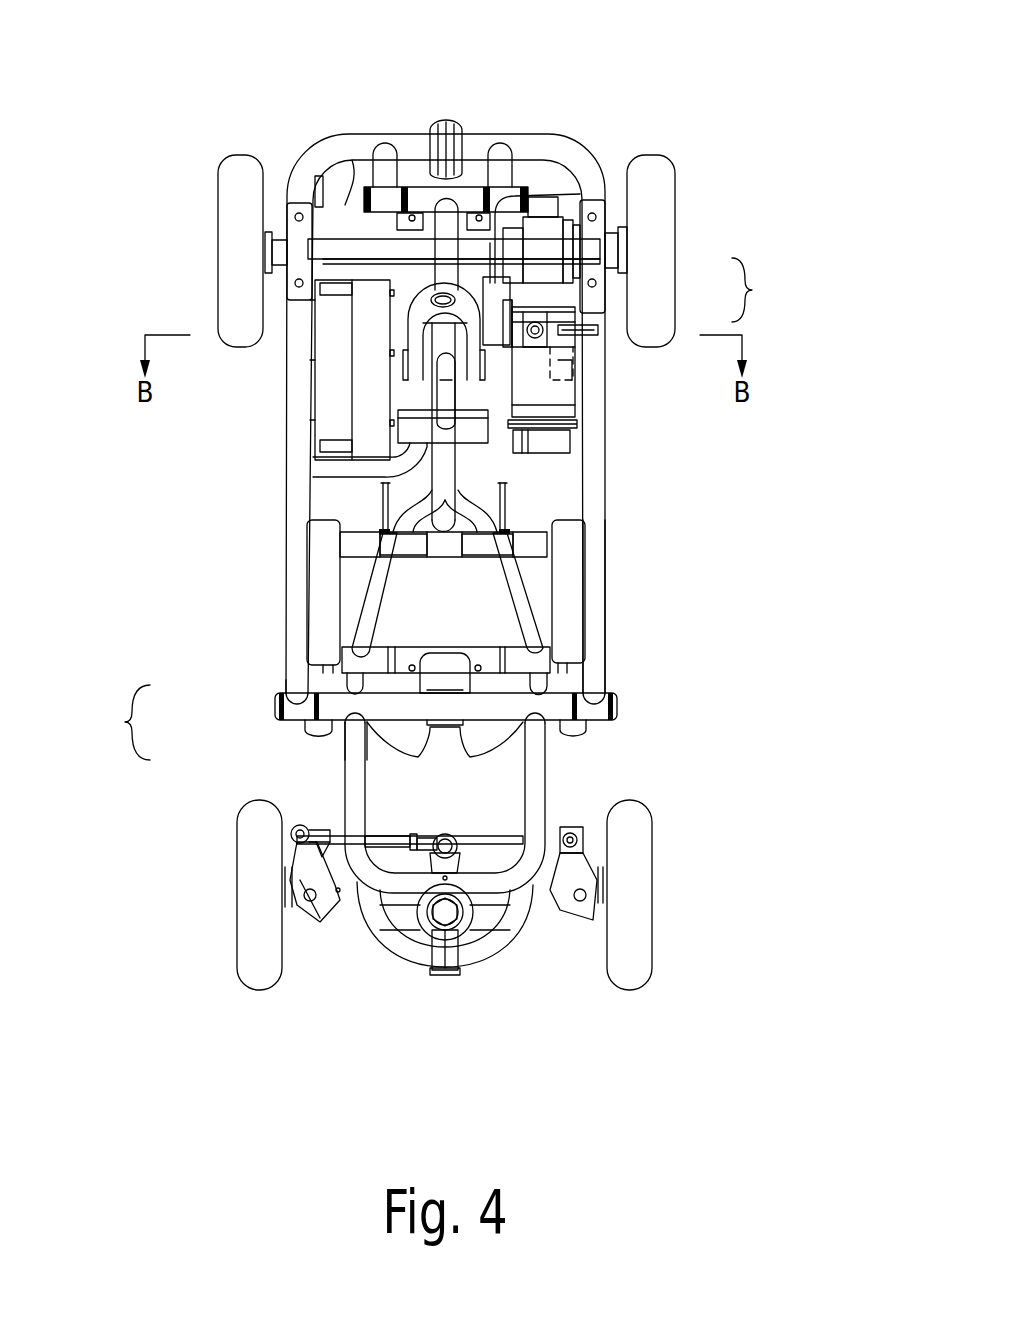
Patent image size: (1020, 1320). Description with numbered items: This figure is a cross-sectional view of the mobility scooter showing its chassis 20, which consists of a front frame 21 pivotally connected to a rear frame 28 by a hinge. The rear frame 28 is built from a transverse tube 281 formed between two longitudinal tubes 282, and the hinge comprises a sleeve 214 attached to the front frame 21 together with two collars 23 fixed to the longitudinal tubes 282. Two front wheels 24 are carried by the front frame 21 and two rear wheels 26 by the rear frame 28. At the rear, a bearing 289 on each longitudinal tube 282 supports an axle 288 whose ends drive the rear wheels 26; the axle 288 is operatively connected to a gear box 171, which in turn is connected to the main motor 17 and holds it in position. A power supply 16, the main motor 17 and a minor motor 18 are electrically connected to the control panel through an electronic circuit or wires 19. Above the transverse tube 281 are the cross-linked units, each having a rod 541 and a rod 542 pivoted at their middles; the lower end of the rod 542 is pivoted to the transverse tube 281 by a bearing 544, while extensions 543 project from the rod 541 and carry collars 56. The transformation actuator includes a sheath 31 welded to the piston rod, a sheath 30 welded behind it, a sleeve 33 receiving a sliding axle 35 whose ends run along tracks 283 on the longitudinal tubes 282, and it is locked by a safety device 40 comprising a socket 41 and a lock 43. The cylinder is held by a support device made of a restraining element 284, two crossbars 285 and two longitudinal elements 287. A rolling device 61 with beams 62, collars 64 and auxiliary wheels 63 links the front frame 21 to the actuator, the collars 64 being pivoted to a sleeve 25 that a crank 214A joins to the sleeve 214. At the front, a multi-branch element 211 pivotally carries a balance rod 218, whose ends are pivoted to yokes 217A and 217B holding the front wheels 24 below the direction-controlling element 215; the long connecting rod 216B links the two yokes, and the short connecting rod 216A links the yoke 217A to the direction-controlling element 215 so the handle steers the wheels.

The power supply 16 is at (328, 300).
The main motor 17 is at (568, 403).
The minor motor 18 is at (568, 357).
The wires 19 is at (342, 270).
The chassis 20 is at (124, 722).
The front frame 21 is at (318, 757).
The collars 23 is at (485, 690).
The front wheels 24 is at (262, 995).
The sleeve 25 is at (403, 657).
The rear wheels 26 is at (235, 188).
The rear frame 28 is at (262, 680).
The sheath 30 is at (483, 272).
The sheath 31 is at (460, 470).
The sleeve 33 is at (462, 553).
The sliding axle 35 is at (345, 541).
The safety device 40 is at (754, 290).
The socket 41 is at (545, 317).
The lock 43 is at (600, 330).
The collars 56 is at (418, 556).
The rolling device 61 is at (520, 510).
The beams 62 is at (357, 626).
The auxiliary wheels 63 is at (578, 733).
The collars 64 is at (527, 661).
The gear box 171 is at (545, 227).
The multi-branch element 211 is at (445, 978).
The sleeve 214 is at (558, 708).
The crank 214A is at (450, 672).
The direction-controlling element 215 is at (455, 863).
The connecting rod 216A is at (292, 834).
The connecting rod 216B is at (560, 835).
The yoke 217A is at (308, 912).
The yoke 217B is at (595, 910).
The balance rod 218 is at (530, 962).
The transverse tube 281 is at (523, 140).
The longitudinal tubes 282 is at (593, 598).
The tracks 283 is at (572, 549).
The restraining element 284 is at (418, 425).
The crossbars 285 is at (317, 468).
The longitudinal elements 287 is at (407, 387).
The axle 288 is at (496, 246).
The bearing 289 is at (295, 235).
The rod 541 is at (572, 450).
The rod 542 is at (447, 207).
The extensions 543 is at (393, 535).
The bearing 544 is at (385, 165).